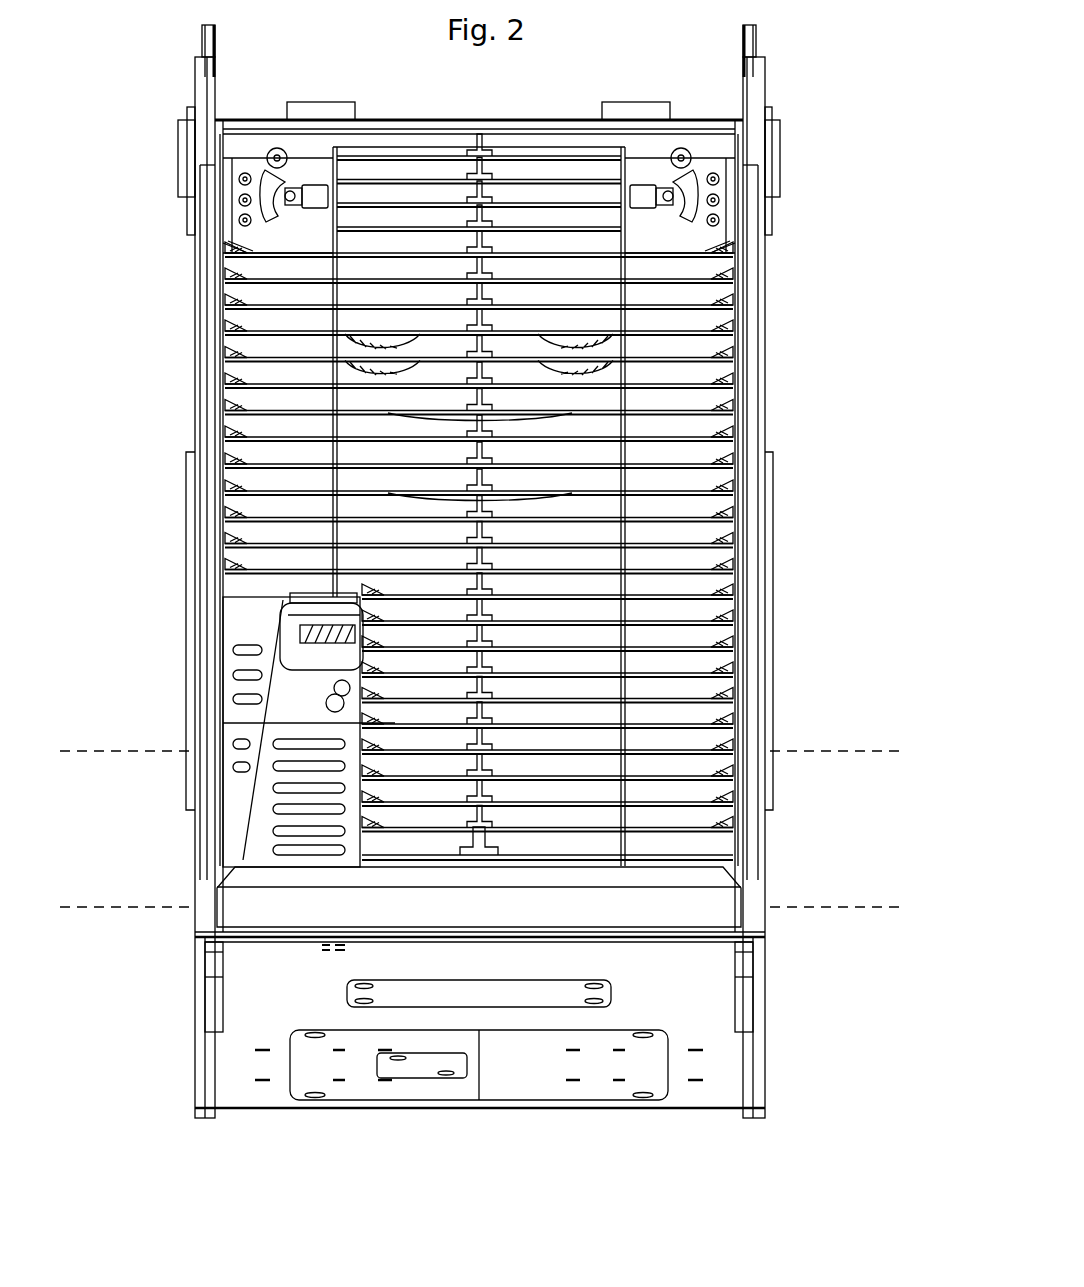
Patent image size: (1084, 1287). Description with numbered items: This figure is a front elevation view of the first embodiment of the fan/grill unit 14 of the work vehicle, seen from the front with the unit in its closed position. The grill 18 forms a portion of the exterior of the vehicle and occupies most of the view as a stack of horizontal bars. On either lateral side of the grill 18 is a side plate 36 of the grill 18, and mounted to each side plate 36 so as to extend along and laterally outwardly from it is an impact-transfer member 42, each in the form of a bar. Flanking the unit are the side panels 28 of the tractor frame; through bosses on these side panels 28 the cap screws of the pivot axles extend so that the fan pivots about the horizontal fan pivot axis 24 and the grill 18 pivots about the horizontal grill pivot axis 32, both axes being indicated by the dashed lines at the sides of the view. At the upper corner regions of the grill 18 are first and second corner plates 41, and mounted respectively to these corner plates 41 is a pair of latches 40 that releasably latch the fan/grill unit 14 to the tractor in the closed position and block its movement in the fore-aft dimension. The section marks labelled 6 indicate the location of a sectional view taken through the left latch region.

The section line 6- 6 is at (246, 272).
The fan/grill unit 14 is at (675, 610).
The grill 18 is at (700, 377).
The fan pivot axis 24 is at (114, 745).
The side panel 28 is at (194, 101).
The grill pivot axis 32 is at (118, 897).
The side plate 36 is at (215, 343).
The latch 40 is at (277, 177).
The corner plate 41 is at (320, 167).
The impact-transfer member 42 is at (203, 387).